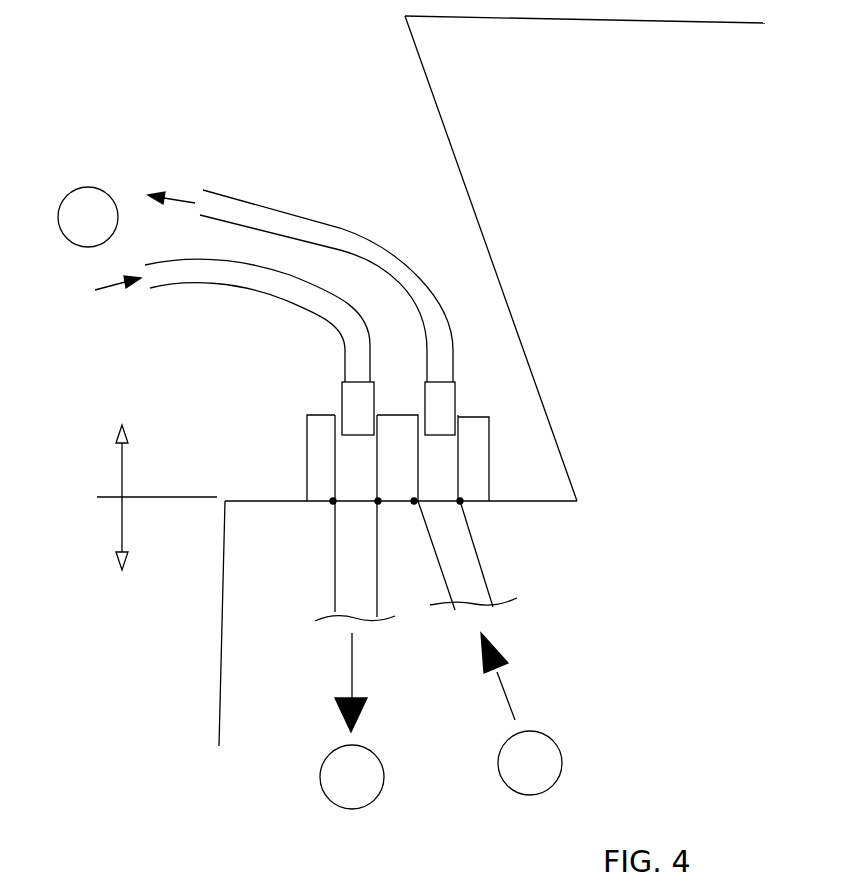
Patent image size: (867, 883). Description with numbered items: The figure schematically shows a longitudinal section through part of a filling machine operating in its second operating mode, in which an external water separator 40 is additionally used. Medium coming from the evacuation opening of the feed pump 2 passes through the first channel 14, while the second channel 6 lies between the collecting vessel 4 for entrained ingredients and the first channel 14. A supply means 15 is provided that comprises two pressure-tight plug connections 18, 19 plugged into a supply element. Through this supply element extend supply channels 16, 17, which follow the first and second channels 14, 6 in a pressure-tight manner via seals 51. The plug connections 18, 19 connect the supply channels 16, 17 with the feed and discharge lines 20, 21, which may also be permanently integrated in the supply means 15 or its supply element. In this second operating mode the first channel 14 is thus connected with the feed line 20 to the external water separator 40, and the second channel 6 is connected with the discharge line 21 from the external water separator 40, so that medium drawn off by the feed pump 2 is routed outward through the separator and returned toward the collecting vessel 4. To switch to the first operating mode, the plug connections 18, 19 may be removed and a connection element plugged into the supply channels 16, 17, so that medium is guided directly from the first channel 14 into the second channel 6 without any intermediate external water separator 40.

The feed pump 2 is at (521, 714).
The collecting vessel 4 is at (352, 721).
The second channel 6 is at (337, 586).
The first channel 14 is at (470, 540).
The supply means 15 is at (492, 478).
The supply channel 16 is at (453, 445).
The supply channel 17 is at (307, 465).
The pressure-tight plug connection 18 is at (457, 385).
The pressure-tight plug connection 19 is at (342, 394).
The feed line 20 is at (286, 212).
The discharge line 21 is at (207, 283).
The external water separator 40 is at (88, 217).
The seals 51 is at (333, 504).